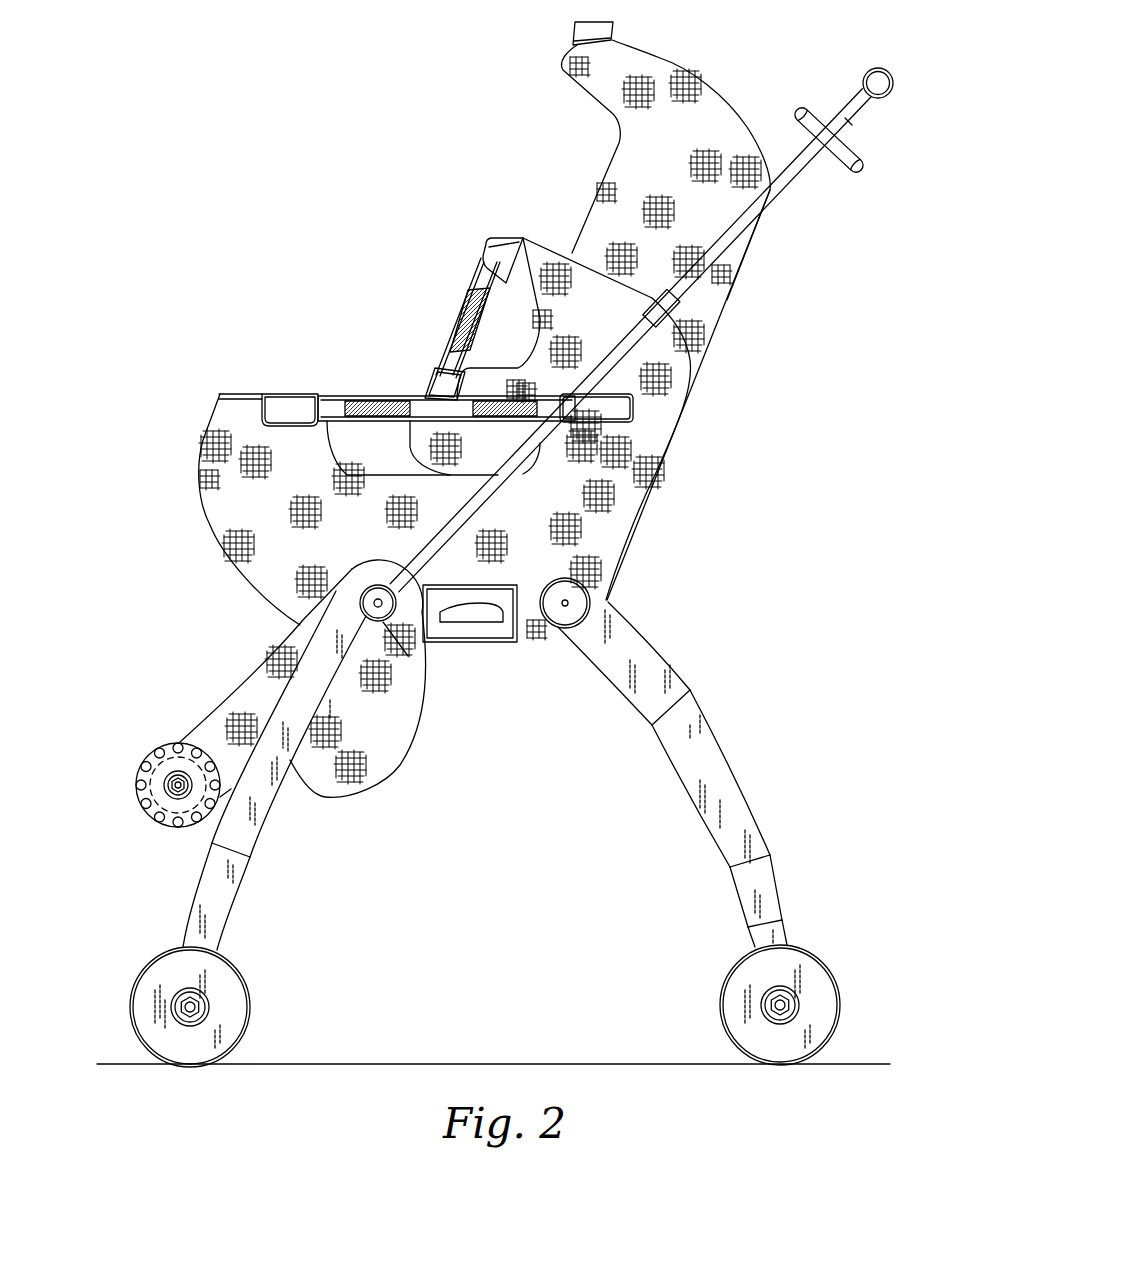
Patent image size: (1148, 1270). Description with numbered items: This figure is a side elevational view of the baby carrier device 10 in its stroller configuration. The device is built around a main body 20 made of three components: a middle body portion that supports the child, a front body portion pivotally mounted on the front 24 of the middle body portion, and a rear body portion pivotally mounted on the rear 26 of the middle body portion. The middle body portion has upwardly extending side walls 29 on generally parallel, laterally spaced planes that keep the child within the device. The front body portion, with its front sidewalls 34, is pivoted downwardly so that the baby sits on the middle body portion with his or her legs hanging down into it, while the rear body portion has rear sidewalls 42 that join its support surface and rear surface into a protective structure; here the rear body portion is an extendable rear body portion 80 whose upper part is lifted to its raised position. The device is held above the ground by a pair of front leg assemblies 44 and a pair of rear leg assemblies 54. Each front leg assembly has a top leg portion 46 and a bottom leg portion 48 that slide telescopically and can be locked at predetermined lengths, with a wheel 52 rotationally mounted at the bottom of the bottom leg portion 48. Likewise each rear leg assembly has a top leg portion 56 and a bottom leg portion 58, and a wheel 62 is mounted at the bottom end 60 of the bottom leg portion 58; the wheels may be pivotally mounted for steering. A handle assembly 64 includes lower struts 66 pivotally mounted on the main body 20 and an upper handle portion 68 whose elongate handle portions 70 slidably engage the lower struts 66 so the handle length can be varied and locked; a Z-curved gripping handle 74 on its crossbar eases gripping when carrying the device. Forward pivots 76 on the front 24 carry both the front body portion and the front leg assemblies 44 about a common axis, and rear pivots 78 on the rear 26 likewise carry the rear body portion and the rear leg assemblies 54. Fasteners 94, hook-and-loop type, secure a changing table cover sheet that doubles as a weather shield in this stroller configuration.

The baby carrier device 10 is at (271, 66).
The main body 20 is at (207, 355).
The front 24 is at (277, 577).
The rear 26 is at (613, 533).
The side walls 29 is at (383, 488).
The front sidewalls 34 is at (207, 725).
The rear sidewalls 42 is at (643, 180).
The front leg assemblies 44 is at (185, 856).
The top leg portion 46 is at (293, 757).
The bottom leg portion 48 is at (238, 872).
The wheel 52 is at (220, 947).
The rear leg assemblies 54 is at (833, 746).
The top leg portion 56 is at (653, 647).
The bottom leg portion 58 is at (773, 877).
The bottom end 60 is at (752, 944).
The wheel 62 is at (725, 998).
The handle assembly 64 is at (769, 330).
The lower struts 66 is at (628, 348).
The upper handle portion 68 is at (790, 185).
The elongate handle portions 70 is at (661, 308).
The Z-curved gripping handle 74 is at (803, 100).
The forward pivots 76 is at (385, 610).
The rear pivots 78 is at (580, 602).
The extendable rear body portion 80 is at (473, 213).
The fasteners 94 is at (153, 767).